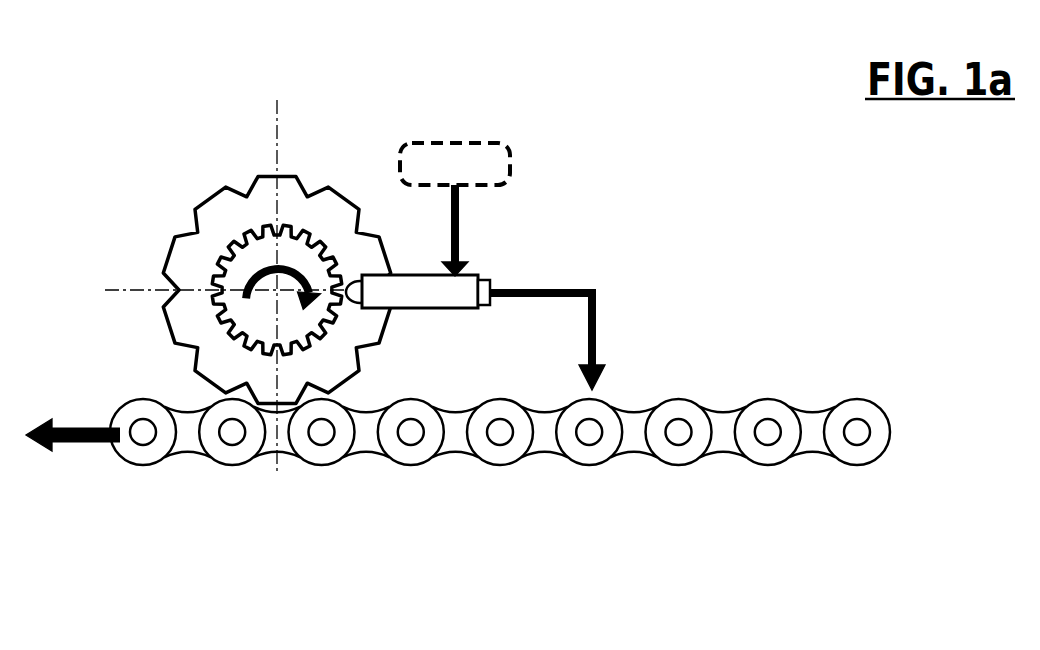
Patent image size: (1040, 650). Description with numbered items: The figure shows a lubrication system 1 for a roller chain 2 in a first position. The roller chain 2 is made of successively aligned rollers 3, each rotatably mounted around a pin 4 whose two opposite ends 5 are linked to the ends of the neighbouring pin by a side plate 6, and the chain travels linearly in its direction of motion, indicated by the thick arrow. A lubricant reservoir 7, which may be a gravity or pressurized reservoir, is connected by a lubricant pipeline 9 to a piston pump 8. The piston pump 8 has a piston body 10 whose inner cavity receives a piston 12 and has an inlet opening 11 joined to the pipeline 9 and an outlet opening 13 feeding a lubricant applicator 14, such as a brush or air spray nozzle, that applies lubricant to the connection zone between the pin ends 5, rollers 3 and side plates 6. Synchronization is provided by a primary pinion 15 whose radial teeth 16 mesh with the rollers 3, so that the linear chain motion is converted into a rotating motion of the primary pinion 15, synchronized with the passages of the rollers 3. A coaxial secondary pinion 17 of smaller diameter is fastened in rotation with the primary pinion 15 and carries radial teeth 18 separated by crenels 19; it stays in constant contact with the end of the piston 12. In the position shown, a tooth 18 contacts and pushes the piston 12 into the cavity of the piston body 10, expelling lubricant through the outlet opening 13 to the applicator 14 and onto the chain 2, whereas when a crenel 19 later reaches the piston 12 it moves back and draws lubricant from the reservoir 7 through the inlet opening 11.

The lubrication system 1 is at (236, 146).
The roller chain 2 is at (903, 447).
The rollers 3 is at (675, 460).
The pin 4 is at (771, 442).
The ends 5 is at (763, 420).
The side plate 6 is at (812, 447).
The lubricant reservoir 7 is at (510, 152).
The piston pump 8 is at (503, 260).
The lubricant pipeline 9 is at (460, 218).
The piston body 10 is at (425, 310).
The inlet opening 11 is at (445, 273).
The piston 12 is at (350, 274).
The outlet opening 13 is at (486, 306).
The lubricant applicator 14 is at (598, 320).
The primary pinion 15 is at (186, 212).
The radial teeth 16 is at (197, 205).
The secondary pinion 17 is at (203, 308).
The radial teeth 18 is at (227, 325).
The crenels 19 is at (218, 273).